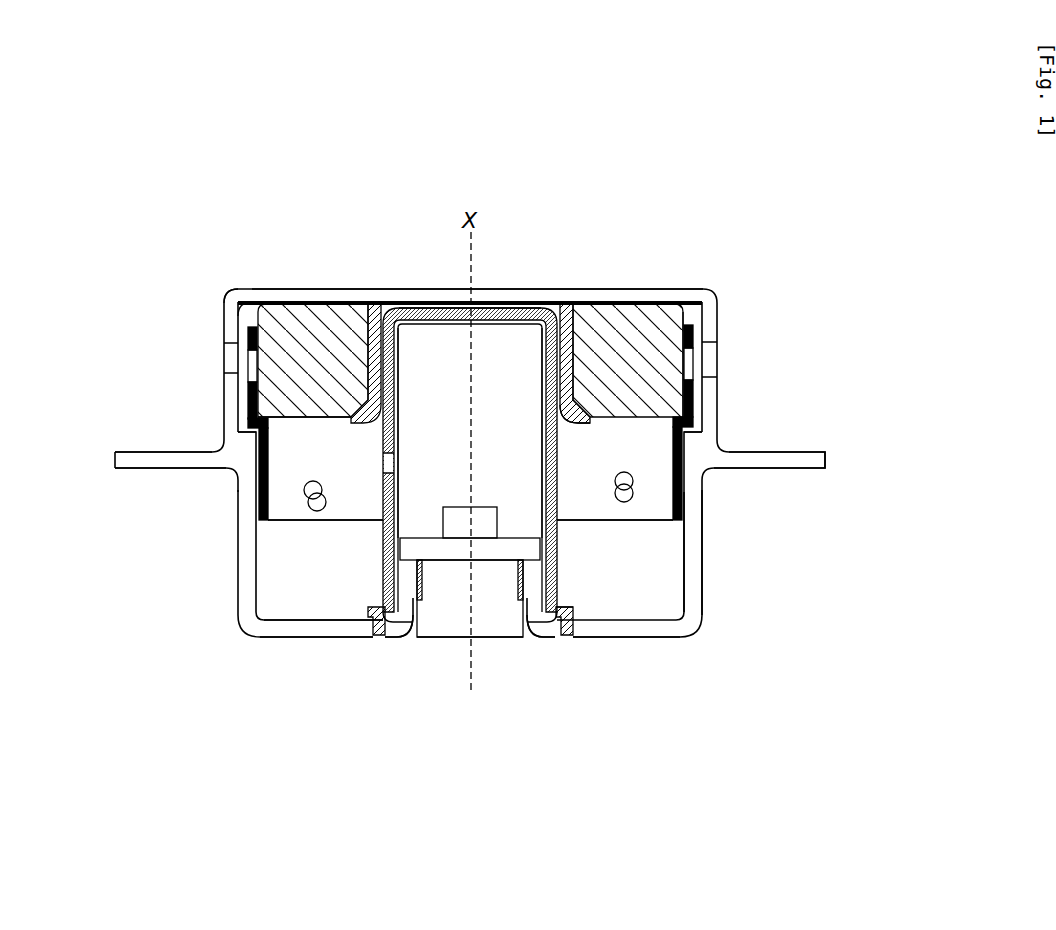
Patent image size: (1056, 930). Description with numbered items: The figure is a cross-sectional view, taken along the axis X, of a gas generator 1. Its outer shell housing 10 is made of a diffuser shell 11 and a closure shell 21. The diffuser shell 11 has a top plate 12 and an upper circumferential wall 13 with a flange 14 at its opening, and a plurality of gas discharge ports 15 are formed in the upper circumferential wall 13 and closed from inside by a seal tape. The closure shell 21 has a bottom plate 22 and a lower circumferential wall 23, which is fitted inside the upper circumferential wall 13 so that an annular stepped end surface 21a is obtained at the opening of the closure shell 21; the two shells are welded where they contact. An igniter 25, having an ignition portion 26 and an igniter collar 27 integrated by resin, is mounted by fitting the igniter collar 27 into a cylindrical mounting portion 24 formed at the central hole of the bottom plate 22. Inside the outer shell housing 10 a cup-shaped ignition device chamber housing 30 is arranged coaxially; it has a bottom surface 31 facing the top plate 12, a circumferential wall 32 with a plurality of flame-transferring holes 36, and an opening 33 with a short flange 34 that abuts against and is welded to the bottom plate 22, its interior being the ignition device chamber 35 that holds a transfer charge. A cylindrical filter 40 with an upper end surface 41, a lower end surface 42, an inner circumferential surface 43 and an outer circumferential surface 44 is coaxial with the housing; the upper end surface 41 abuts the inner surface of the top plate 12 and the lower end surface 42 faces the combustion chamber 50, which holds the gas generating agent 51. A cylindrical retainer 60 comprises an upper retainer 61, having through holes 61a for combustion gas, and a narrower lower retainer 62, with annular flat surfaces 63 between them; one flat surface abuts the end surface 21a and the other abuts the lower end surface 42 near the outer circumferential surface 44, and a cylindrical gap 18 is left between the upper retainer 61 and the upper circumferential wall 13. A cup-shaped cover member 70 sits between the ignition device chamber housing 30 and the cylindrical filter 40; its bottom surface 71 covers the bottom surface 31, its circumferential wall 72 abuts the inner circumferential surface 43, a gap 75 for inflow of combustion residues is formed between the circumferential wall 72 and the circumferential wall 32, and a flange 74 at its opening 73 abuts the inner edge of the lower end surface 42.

The gas generator 1 is at (505, 462).
The outer shell housing 10 is at (529, 460).
The diffuser shell 11 is at (717, 413).
The top plate 12 is at (317, 288).
The upper circumferential wall 13 is at (224, 311).
The flange 14 is at (143, 451).
The gas discharge ports 15 is at (224, 359).
The cylindrical gap 18 is at (247, 316).
The closure shell 21 is at (560, 530).
The end surface 21a is at (696, 424).
The bottom plate 22 is at (622, 638).
The lower circumferential wall 23 is at (702, 590).
The cylindrical mounting portion 24 is at (412, 609).
The igniter 25 is at (490, 645).
The ignition portion 26 is at (488, 512).
The igniter collar 27 is at (435, 637).
The cup-shaped ignition device chamber housing 30 is at (437, 433).
The bottom surface 31 is at (438, 307).
The circumferential wall 32 is at (559, 493).
The opening 33 is at (533, 625).
The flange 34 is at (571, 607).
The ignition device chamber 35 is at (442, 487).
The flame-transferring holes 36 is at (383, 465).
The cylindrical filter 40 is at (313, 362).
The upper end surface 41 is at (292, 303).
The lower end surface 42 is at (322, 420).
The inner circumferential surface 43 is at (558, 371).
The outer circumferential surface 44 is at (684, 318).
The combustion chamber 50 is at (668, 559).
The gas generating agent 51 is at (316, 511).
The cylindrical retainer 60 is at (431, 440).
The upper retainer 61 is at (248, 420).
The through holes 61a is at (256, 373).
The lower retainer 62 is at (257, 478).
The annular flat surfaces 63 is at (678, 398).
The cup-shaped cover member 70 is at (470, 356).
The bottom surface 71 is at (395, 302).
The circumferential wall 72 is at (396, 357).
The opening 73 is at (561, 413).
The flange 74 is at (586, 424).
The gap 75 is at (393, 389).